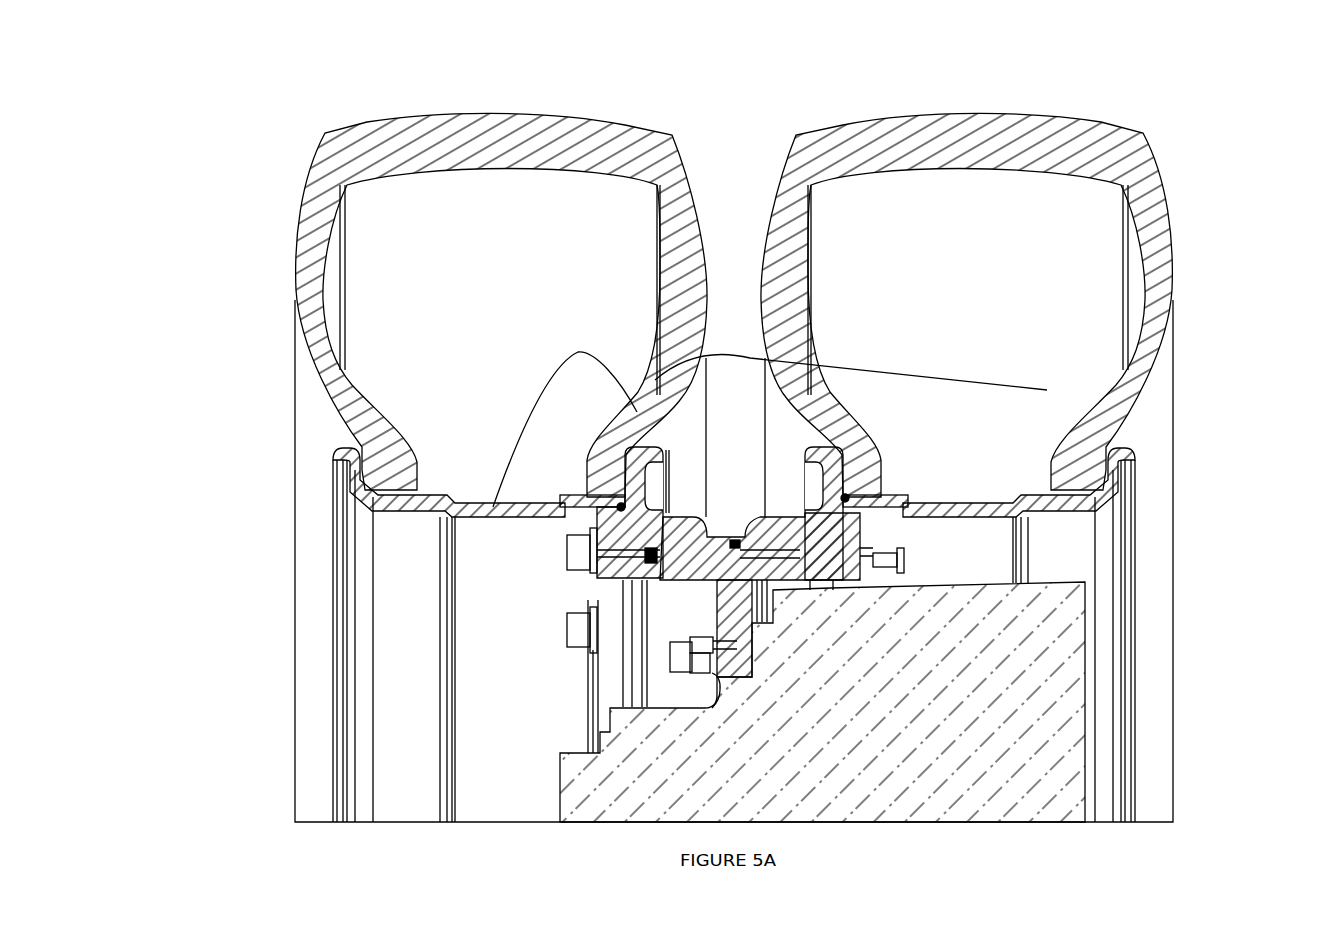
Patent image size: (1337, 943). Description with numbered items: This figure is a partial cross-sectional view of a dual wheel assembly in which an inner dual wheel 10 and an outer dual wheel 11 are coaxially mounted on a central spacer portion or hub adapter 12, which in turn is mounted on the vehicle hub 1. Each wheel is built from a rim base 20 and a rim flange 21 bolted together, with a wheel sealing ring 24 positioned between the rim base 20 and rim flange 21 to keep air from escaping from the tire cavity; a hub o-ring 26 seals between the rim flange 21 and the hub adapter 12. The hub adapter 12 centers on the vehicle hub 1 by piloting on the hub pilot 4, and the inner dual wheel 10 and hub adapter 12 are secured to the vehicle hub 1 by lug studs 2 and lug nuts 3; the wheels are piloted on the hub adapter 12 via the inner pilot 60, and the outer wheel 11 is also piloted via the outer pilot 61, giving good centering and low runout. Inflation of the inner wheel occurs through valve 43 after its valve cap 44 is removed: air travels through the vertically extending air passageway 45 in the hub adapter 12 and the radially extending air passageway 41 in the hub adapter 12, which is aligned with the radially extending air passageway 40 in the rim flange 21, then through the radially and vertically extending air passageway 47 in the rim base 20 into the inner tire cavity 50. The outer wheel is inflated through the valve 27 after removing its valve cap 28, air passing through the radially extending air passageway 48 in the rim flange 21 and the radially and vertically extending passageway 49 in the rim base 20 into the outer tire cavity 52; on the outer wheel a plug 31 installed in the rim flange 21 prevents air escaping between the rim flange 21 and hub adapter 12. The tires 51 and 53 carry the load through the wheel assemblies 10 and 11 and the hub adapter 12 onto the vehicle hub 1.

The vehicle hub 1 is at (783, 702).
The lug studs 2 is at (608, 674).
The lug nuts 3 is at (601, 676).
The hub pilot 4 is at (736, 712).
The inner dual wheel 10 is at (1099, 621).
The outer dual wheel 11 is at (369, 621).
The hub adapter 12 is at (760, 528).
The rim base 20 is at (861, 430).
The rim flange 21 is at (642, 429).
The wheel sealing ring 24 is at (754, 447).
The hub o-ring 26 is at (786, 602).
The valve 27 is at (716, 584).
The valve cap 28 is at (713, 597).
The plug 31 is at (681, 481).
The air passageway 40 is at (838, 475).
The air passageway 41 is at (735, 453).
The valve 43 is at (675, 744).
The valve cap 44 is at (651, 752).
The air passageway 45 is at (762, 643).
The air passageway 47 is at (900, 521).
The air passageway 48 is at (642, 511).
The passageway 49 is at (589, 472).
The inner tire cavity 50 is at (1063, 255).
The tire 51 is at (1004, 279).
The outer tire cavity 52 is at (404, 255).
The tire 53 is at (462, 279).
The inner pilot 60 is at (799, 625).
The outer pilot 61 is at (585, 642).